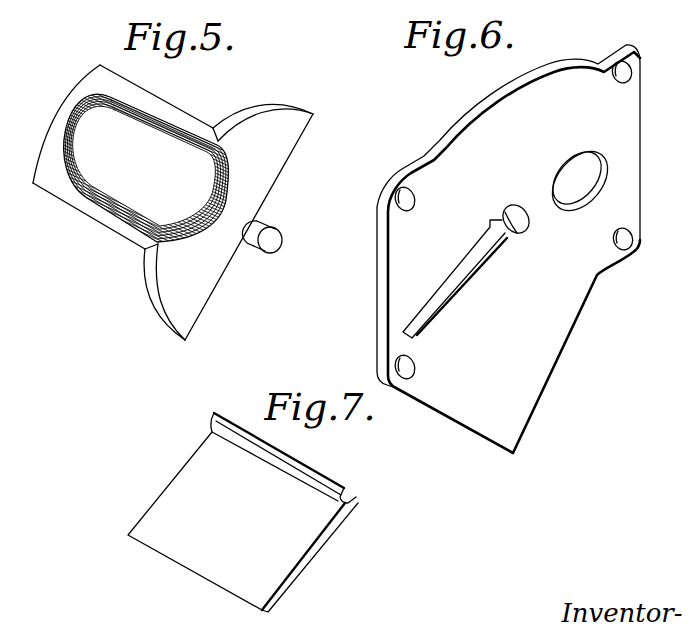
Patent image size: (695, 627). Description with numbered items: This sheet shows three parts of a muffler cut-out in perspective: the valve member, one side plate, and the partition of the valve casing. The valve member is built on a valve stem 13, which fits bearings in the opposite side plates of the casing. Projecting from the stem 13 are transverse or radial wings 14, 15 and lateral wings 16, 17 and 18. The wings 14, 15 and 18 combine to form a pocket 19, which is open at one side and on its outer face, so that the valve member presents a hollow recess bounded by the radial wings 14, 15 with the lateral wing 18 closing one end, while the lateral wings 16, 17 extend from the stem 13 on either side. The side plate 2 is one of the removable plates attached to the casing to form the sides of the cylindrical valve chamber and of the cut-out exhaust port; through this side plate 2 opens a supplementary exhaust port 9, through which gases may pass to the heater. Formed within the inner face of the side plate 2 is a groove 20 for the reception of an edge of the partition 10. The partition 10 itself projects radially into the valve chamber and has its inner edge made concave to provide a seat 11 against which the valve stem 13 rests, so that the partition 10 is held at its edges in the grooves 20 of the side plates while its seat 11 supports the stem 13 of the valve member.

In FIG. 5, the lateral wing 18 is at (56, 117).
In FIG. 5, the transverse or radial wing 14 is at (173, 112).
In FIG. 5, the lateral wing 16 is at (249, 222).
In FIG. 5, the transverse or radial wing 15 is at (103, 223).
In FIG. 5, the lateral wing 17 is at (167, 292).
In FIG. 5, the pocket 19 is at (146, 168).
In FIG. 5, the valve stem 13 is at (262, 225).
In FIG. 6, the side plate 2 is at (508, 249).
In FIG. 6, the supplementary exhaust port 9 is at (579, 181).
In FIG. 6, the groove 20 is at (450, 283).
In FIG. 7, the partition 10 is at (243, 522).
In FIG. 7, the seat 11 is at (275, 455).